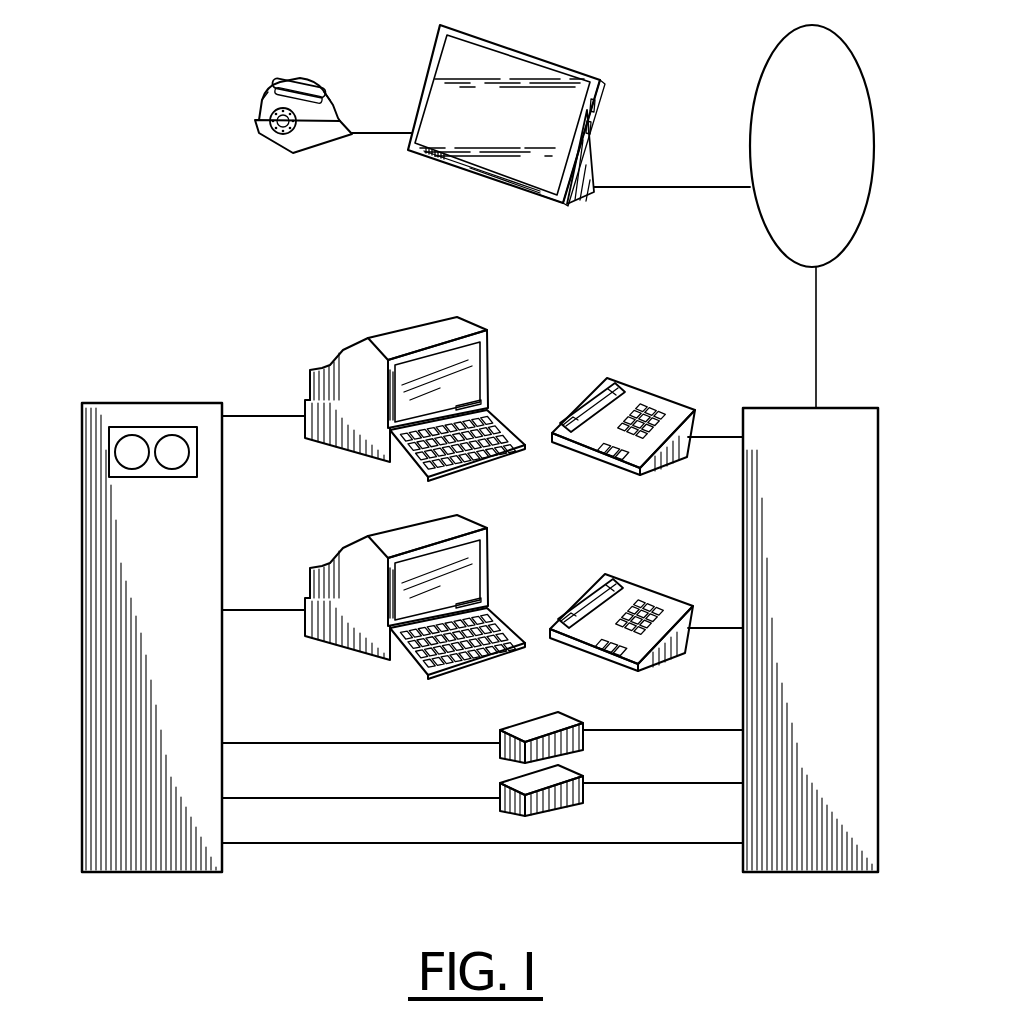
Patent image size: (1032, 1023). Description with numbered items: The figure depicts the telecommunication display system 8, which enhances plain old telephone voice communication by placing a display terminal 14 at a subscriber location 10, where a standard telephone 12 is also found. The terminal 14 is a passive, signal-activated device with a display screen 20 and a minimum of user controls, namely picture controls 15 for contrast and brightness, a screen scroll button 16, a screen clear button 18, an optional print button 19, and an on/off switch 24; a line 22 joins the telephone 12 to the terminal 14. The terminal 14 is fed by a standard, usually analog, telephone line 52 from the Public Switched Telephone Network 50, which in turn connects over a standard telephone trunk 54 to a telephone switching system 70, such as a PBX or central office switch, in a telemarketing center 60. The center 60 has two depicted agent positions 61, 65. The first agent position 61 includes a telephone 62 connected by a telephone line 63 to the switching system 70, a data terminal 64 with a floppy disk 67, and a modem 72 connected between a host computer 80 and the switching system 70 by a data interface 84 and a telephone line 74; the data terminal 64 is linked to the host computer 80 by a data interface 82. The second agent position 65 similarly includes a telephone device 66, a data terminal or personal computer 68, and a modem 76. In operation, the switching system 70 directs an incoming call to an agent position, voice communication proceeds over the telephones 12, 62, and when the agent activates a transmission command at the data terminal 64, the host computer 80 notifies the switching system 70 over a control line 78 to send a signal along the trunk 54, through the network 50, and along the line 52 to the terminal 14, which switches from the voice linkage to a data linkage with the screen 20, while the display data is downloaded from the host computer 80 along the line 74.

The telecommunication display system 8 is at (266, 42).
The subscriber location 10 is at (348, 197).
The telephone 12 is at (262, 141).
The display terminal 14 is at (515, 129).
The picture controls 15 is at (589, 126).
The screen scroll button 16 is at (507, 183).
The screen clear button 18 is at (537, 200).
The print button 19 is at (421, 158).
The display screen 20 is at (493, 78).
The telephone line 22 is at (387, 131).
The on/off switch 24 is at (586, 157).
The Public Switched Telephone Network 50 is at (795, 234).
The telephone line 52 is at (695, 187).
The telephone trunk 54 is at (816, 323).
The telemarketing center 60 is at (546, 516).
The agent position 61 is at (427, 399).
The telephone 62 is at (628, 385).
The telephone line 63 is at (716, 436).
The data terminal 64 is at (490, 347).
The agent position 65 is at (385, 597).
The telephone device 66 is at (646, 613).
The floppy disk 67 is at (485, 405).
The data terminal 68 is at (458, 570).
The telephone switching system 70 is at (790, 761).
The modem 72 is at (522, 723).
The telephone line 74 is at (666, 730).
The modem 76 is at (482, 788).
The control line 78 is at (302, 843).
The host computer 80 is at (157, 759).
The data interface 82 is at (282, 415).
The data interface 84 is at (313, 741).